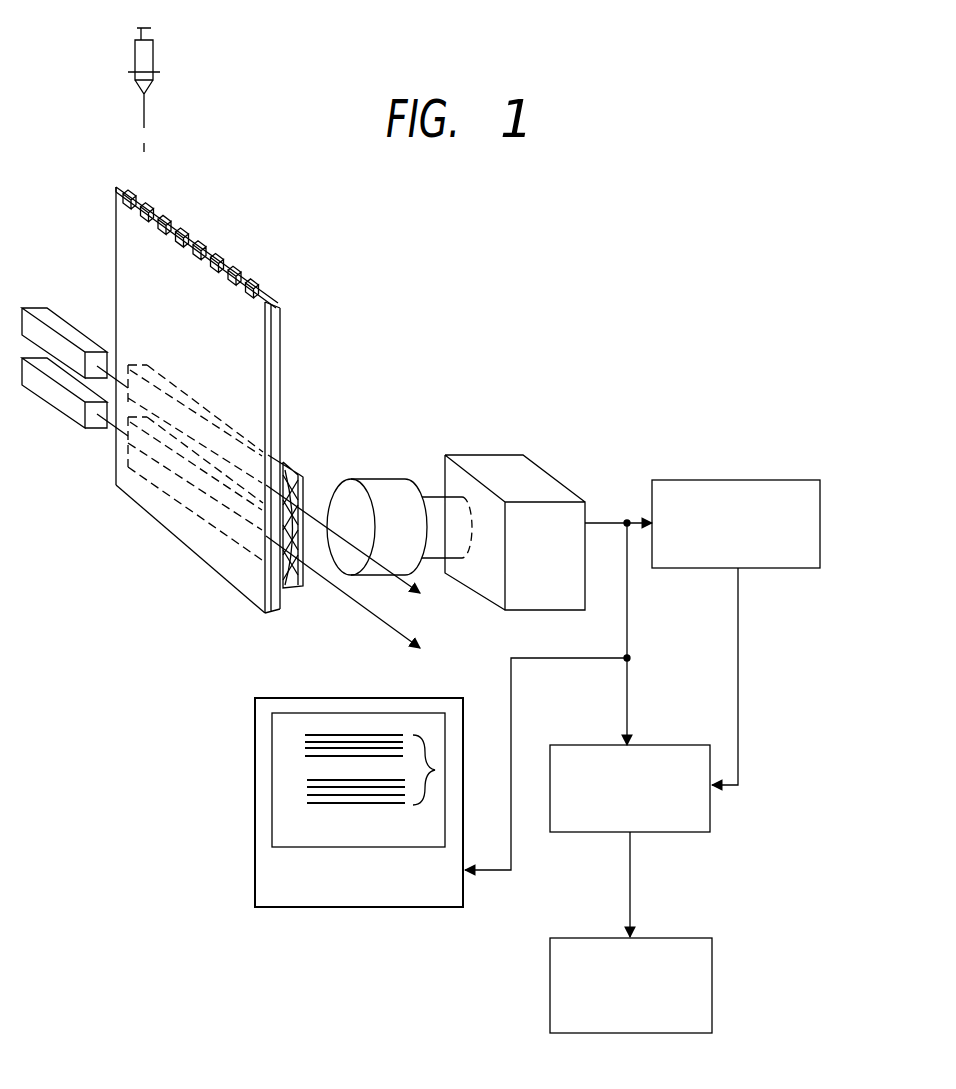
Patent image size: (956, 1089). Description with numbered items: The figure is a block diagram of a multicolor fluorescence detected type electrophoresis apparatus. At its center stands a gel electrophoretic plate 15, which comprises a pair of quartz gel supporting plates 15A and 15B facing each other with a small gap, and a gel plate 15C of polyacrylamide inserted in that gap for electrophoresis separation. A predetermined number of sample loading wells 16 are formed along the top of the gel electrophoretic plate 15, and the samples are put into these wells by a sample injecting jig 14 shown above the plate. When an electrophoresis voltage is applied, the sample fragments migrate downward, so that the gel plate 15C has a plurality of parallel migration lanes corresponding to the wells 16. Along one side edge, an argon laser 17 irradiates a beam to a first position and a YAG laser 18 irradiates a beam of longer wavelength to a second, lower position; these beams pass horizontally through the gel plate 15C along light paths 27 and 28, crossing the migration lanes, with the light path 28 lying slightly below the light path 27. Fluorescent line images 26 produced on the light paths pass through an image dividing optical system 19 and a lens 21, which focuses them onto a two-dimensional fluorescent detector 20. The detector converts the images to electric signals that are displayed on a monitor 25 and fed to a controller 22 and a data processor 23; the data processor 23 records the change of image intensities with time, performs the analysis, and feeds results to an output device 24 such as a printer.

The sample injecting jig 14 is at (153, 59).
The gel electrophoretic plate 15 is at (204, 364).
The quartz gel supporting plate 15A is at (113, 195).
The quartz gel supporting plate 15B is at (132, 193).
The gel plate 15C is at (281, 313).
The sample loading wells 16 is at (138, 195).
The argon laser 17 is at (47, 312).
The YAG laser 18 is at (42, 410).
The image dividing optical system 19 is at (306, 445).
The two-dimensional fluorescent detector 20 is at (520, 465).
The lens 21 is at (388, 478).
The controller 22 is at (777, 479).
The data processor 23 is at (680, 745).
The output device 24 is at (684, 937).
The monitor 25 is at (401, 849).
The fluorescent line images 26 is at (435, 770).
The light path 27 is at (214, 450).
The light path 28 is at (225, 510).